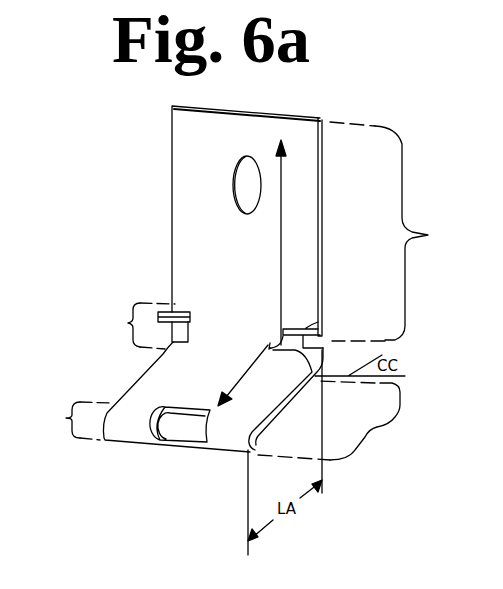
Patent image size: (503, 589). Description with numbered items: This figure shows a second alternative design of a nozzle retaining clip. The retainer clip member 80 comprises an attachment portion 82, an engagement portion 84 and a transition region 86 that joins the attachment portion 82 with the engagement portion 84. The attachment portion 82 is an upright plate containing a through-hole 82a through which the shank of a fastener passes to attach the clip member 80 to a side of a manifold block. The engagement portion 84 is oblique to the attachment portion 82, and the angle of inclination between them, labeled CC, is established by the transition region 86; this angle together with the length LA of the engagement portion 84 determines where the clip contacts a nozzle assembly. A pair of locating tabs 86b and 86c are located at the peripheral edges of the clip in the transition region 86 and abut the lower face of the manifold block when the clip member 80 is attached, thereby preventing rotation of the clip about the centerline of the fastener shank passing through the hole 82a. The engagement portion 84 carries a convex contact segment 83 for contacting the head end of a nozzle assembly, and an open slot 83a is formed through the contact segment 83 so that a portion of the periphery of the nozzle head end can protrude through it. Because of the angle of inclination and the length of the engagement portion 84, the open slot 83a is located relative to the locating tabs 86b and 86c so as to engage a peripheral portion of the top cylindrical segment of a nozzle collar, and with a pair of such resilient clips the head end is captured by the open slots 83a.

The retainer clip member 80 is at (193, 218).
The attachment portion 82 is at (428, 235).
The through-hole 82a is at (252, 195).
The contact segment 83 is at (136, 406).
The open slot 83a is at (183, 425).
The engagement portion 84 is at (372, 428).
The transition region 86 is at (223, 311).
The locating tab 86b is at (173, 311).
The locating tab 86c is at (315, 323).